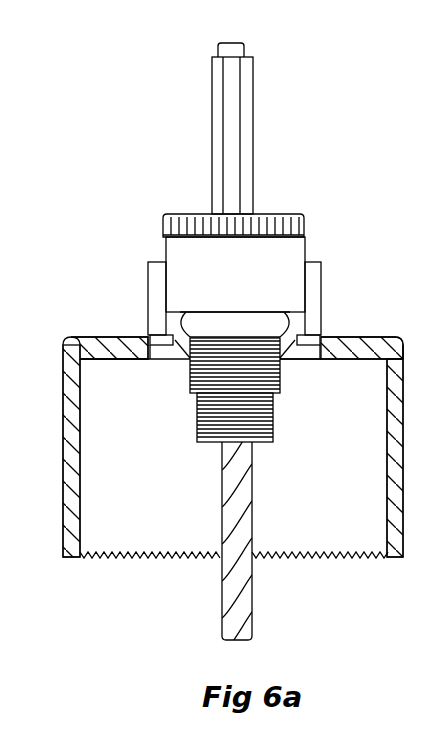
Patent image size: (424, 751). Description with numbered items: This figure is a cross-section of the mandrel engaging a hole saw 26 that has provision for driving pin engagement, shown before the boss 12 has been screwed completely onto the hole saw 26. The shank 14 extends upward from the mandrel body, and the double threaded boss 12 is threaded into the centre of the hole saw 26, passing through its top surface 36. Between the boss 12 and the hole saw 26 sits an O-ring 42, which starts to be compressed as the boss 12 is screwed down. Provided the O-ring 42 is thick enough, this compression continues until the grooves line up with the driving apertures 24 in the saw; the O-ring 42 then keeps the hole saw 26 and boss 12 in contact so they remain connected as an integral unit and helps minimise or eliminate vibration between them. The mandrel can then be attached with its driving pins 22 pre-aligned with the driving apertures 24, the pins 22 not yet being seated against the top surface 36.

The boss 12 is at (181, 383).
The shank 14 is at (304, 222).
The driving pins 22 is at (152, 292).
The driving apertures 24 is at (330, 336).
The hole saw 26 is at (63, 380).
The top surface 36 is at (370, 336).
The O-ring 42 is at (178, 322).